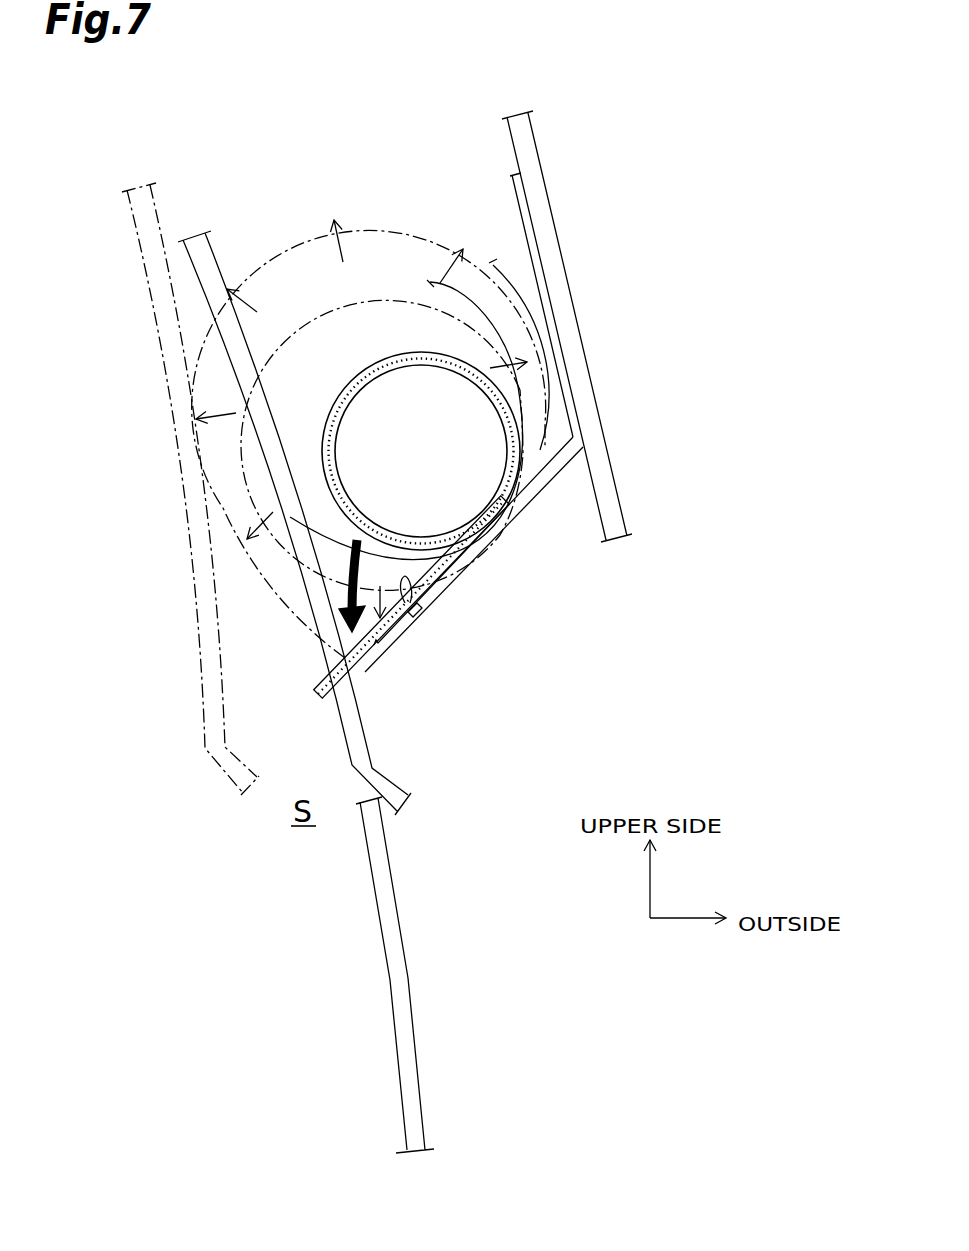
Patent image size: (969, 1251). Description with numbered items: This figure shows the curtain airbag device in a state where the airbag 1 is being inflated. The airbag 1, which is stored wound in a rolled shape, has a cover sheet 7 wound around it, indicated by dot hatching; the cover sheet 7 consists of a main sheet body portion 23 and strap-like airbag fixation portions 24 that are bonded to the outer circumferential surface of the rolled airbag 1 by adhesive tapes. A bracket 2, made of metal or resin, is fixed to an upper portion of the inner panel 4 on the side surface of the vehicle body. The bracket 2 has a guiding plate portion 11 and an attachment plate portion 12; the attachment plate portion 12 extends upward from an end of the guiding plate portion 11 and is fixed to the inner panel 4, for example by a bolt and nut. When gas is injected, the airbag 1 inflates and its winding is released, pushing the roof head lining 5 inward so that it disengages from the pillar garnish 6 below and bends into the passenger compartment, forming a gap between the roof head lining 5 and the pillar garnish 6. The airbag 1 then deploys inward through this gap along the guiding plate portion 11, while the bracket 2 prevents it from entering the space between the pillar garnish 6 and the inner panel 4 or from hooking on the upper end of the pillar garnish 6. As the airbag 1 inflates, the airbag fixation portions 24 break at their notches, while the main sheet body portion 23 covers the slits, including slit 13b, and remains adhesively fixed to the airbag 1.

The airbag 1 is at (356, 213).
The bracket 2 is at (535, 531).
The inner panel 4 is at (574, 311).
The roof head lining 5 is at (197, 640).
The pillar garnish 6 is at (390, 980).
The cover sheet 7 is at (352, 354).
The guiding plate portion 11 is at (477, 560).
The attachment plate portion 12 is at (514, 199).
The slit 13b is at (400, 637).
The main sheet body portion 23 is at (427, 603).
The airbag fixation portion 24 is at (547, 393).